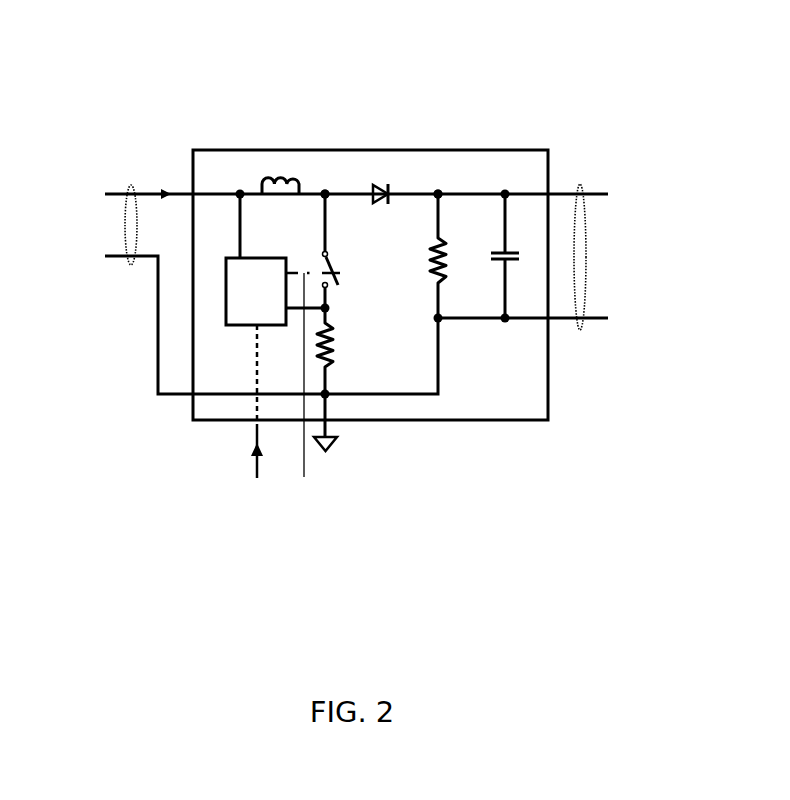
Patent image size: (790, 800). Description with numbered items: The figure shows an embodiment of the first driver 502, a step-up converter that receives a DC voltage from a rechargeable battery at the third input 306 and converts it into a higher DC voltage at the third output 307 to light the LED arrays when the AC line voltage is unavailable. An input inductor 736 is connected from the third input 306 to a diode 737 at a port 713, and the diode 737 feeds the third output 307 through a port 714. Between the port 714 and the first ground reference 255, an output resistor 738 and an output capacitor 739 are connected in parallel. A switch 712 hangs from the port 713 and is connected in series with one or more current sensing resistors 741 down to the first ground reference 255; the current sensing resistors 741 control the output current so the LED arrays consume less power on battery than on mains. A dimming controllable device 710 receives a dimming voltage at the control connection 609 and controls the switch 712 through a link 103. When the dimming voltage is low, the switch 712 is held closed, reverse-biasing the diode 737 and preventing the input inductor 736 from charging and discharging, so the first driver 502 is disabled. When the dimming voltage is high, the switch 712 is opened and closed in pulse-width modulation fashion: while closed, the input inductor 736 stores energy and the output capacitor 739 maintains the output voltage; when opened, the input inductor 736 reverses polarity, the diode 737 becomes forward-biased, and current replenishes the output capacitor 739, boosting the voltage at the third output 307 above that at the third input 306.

The link 103 is at (304, 389).
The first ground reference 255 is at (334, 448).
The third input 306 is at (129, 186).
The third output 307 is at (587, 278).
The first driver 502 is at (495, 139).
The control connection 609 is at (257, 478).
The dimming controllable device 710 is at (227, 318).
The switch 712 is at (338, 288).
The port 713 is at (323, 192).
The port 714 is at (439, 192).
The input inductor 736 is at (278, 177).
The diode 737 is at (383, 188).
The output resistor 738 is at (437, 284).
The output capacitor 739 is at (510, 262).
The current sensing resistors 741 is at (333, 353).